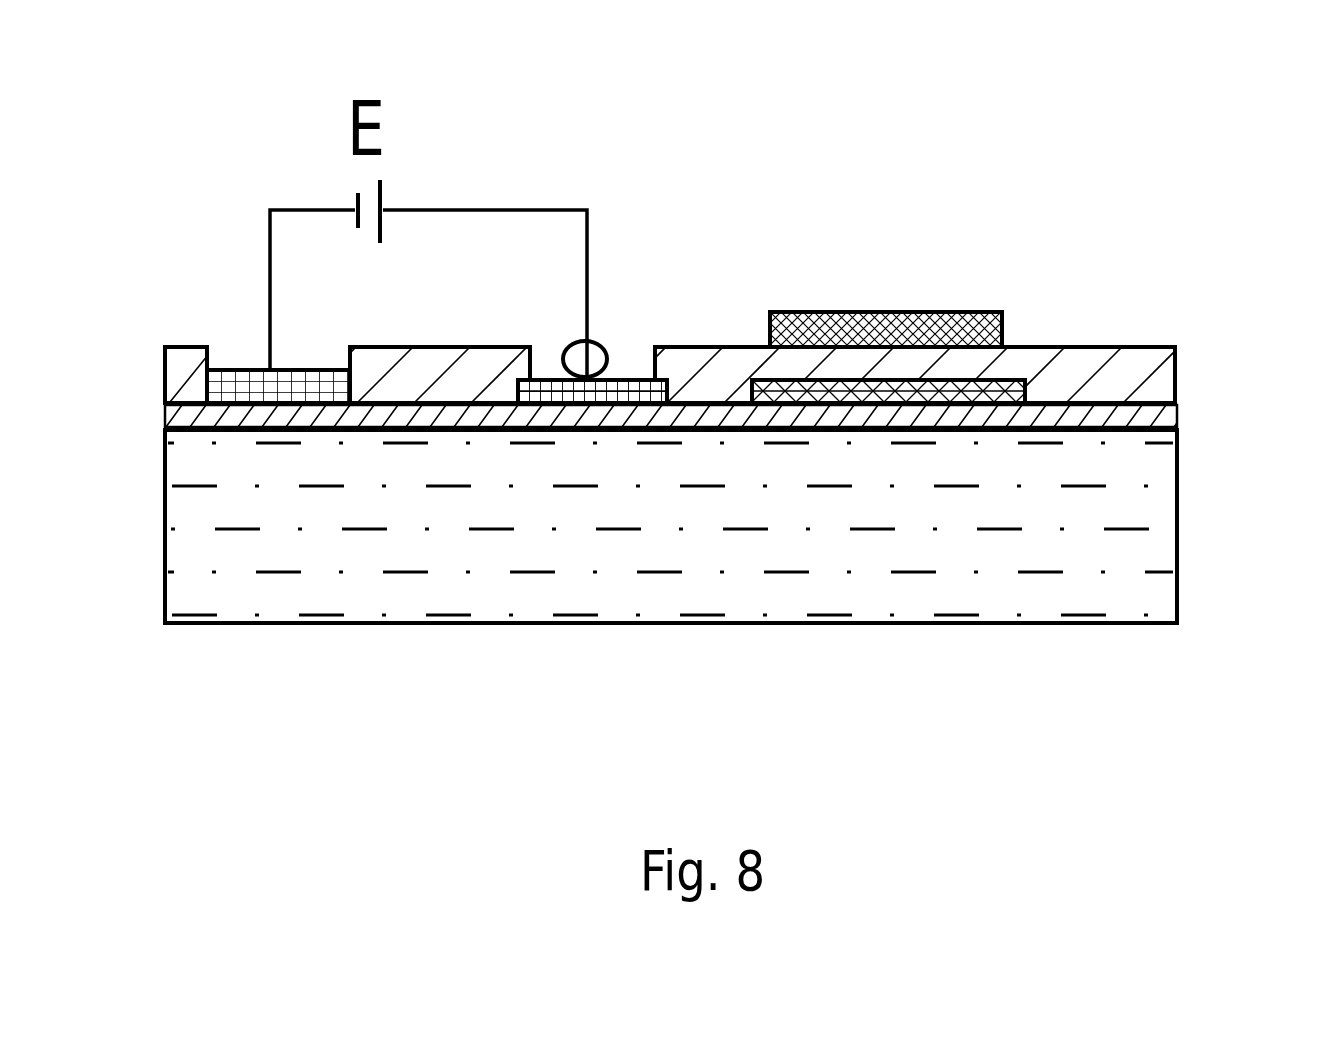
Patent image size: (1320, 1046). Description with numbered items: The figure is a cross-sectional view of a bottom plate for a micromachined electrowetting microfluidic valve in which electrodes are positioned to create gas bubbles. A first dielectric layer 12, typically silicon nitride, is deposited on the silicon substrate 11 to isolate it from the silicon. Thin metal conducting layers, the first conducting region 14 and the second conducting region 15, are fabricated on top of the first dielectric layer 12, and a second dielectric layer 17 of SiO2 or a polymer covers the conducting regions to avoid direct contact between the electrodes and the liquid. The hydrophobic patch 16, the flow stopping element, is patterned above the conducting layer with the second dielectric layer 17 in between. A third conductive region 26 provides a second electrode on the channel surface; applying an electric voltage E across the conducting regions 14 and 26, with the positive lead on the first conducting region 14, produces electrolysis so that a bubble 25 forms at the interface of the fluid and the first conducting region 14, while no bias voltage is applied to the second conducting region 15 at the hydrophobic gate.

The silicon substrate 11 is at (733, 530).
The first dielectric layer 12 is at (1067, 410).
The first conducting region 14 is at (622, 382).
The second conducting region 15 is at (975, 380).
The hydrophobic patch 16 is at (897, 312).
The second dielectric layer 17 is at (503, 347).
The bubble 25 is at (572, 345).
The third conductive region 26 is at (248, 370).